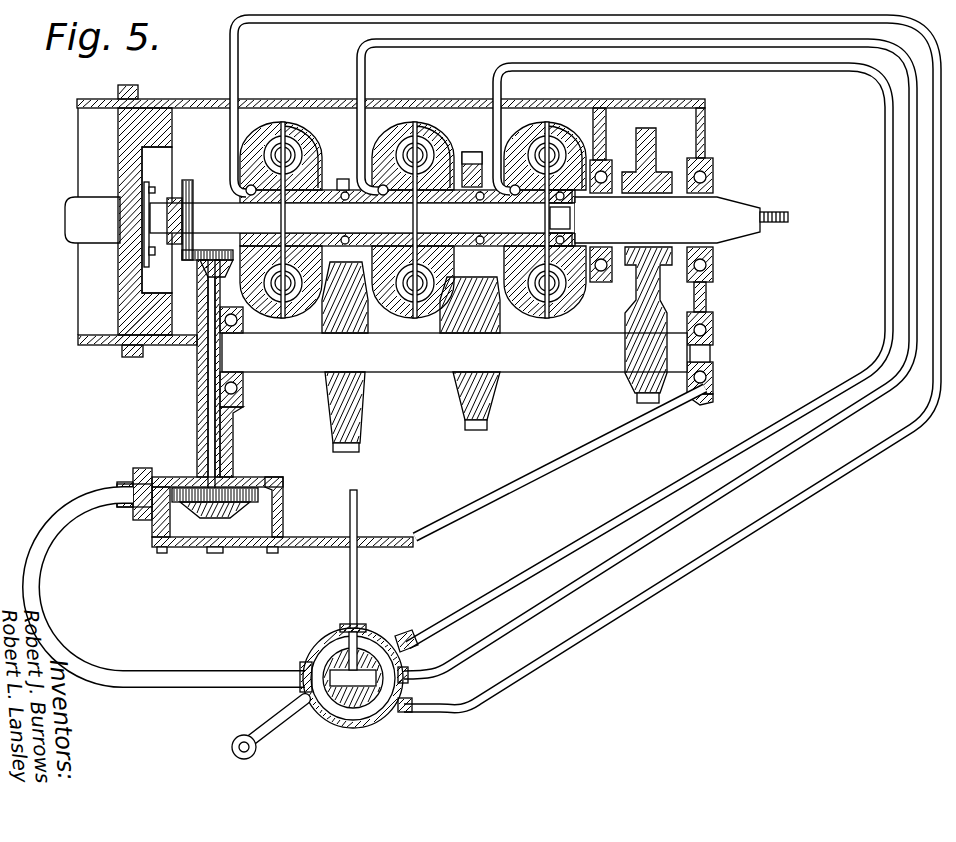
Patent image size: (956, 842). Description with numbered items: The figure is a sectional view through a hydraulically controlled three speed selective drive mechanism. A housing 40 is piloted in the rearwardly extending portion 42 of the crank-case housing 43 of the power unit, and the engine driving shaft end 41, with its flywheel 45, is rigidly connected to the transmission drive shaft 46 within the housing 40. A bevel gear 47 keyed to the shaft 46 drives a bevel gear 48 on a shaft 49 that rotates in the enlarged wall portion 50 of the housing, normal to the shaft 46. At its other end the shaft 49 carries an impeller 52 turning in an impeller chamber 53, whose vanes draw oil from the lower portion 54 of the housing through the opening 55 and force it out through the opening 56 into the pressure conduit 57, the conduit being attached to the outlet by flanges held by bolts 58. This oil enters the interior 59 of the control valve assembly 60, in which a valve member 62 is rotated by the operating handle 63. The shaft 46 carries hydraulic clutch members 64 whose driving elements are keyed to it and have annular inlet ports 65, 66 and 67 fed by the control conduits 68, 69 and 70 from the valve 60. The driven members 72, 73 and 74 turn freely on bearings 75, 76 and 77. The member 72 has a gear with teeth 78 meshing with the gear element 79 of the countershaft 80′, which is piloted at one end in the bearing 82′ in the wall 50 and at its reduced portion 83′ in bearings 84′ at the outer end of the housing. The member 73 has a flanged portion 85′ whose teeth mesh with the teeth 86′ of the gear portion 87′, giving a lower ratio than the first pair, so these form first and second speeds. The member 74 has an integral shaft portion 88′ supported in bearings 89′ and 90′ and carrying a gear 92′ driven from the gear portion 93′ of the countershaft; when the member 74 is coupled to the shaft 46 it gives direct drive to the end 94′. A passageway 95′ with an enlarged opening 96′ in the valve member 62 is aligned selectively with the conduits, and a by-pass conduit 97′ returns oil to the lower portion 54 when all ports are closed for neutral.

The housing 40 is at (205, 97).
The drive shaft end 41 is at (80, 200).
The rearwardly extending portion 42 is at (120, 90).
The crank-case housing 43 is at (80, 99).
The flywheel 45 is at (130, 297).
The drive shaft 46 is at (212, 203).
The bevel gear 47 is at (186, 180).
The bevel gear 48 is at (205, 270).
The shaft 49 is at (210, 383).
The enlarged wall portion 50 is at (197, 428).
The impeller 52 is at (240, 488).
The impeller chamber 53 is at (283, 490).
The lower portion 54 is at (438, 526).
The opening 55 is at (270, 520).
The opening 56 is at (160, 486).
The pressure conduit 57 is at (80, 500).
The bolts 58 is at (133, 474).
The interior 59 is at (318, 655).
The control valve assembly 60 is at (345, 726).
The valve member 62 is at (378, 718).
The operating handle 63 is at (258, 729).
The hydraulic clutch members 64 is at (258, 125).
The annular inlet port 65 is at (262, 250).
The annular inlet port 66 is at (395, 250).
The annular inlet port 67 is at (528, 250).
The control conduit 68 is at (230, 40).
The control conduit 69 is at (359, 60).
The control conduit 70 is at (496, 85).
The driven member 72 is at (303, 150).
The driven member 73 is at (430, 130).
The driven member 74 is at (560, 125).
The bearing 75 is at (325, 188).
The bearing 76 is at (467, 144).
The bearing 77 is at (575, 240).
The teeth 78 is at (343, 169).
The gear element 79 is at (357, 430).
The countershaft 80′ is at (298, 372).
The bearing 82′ is at (224, 393).
The reduced portion 83′ is at (710, 353).
The bearings 84′ is at (713, 330).
The annularly flanged portion 85′ is at (476, 152).
The teeth 86′ is at (482, 430).
The gear portion 87′ is at (487, 400).
The shaft portion 88′ is at (718, 208).
The bearing 89′ is at (606, 165).
The bearing 90′ is at (713, 168).
The gear 92′ is at (656, 145).
The gear portion 93′ is at (637, 385).
The end 94′ is at (778, 212).
The passageway 95′ is at (400, 637).
The enlarged opening 96′ is at (414, 704).
The by-pass conduit 97′ is at (350, 566).